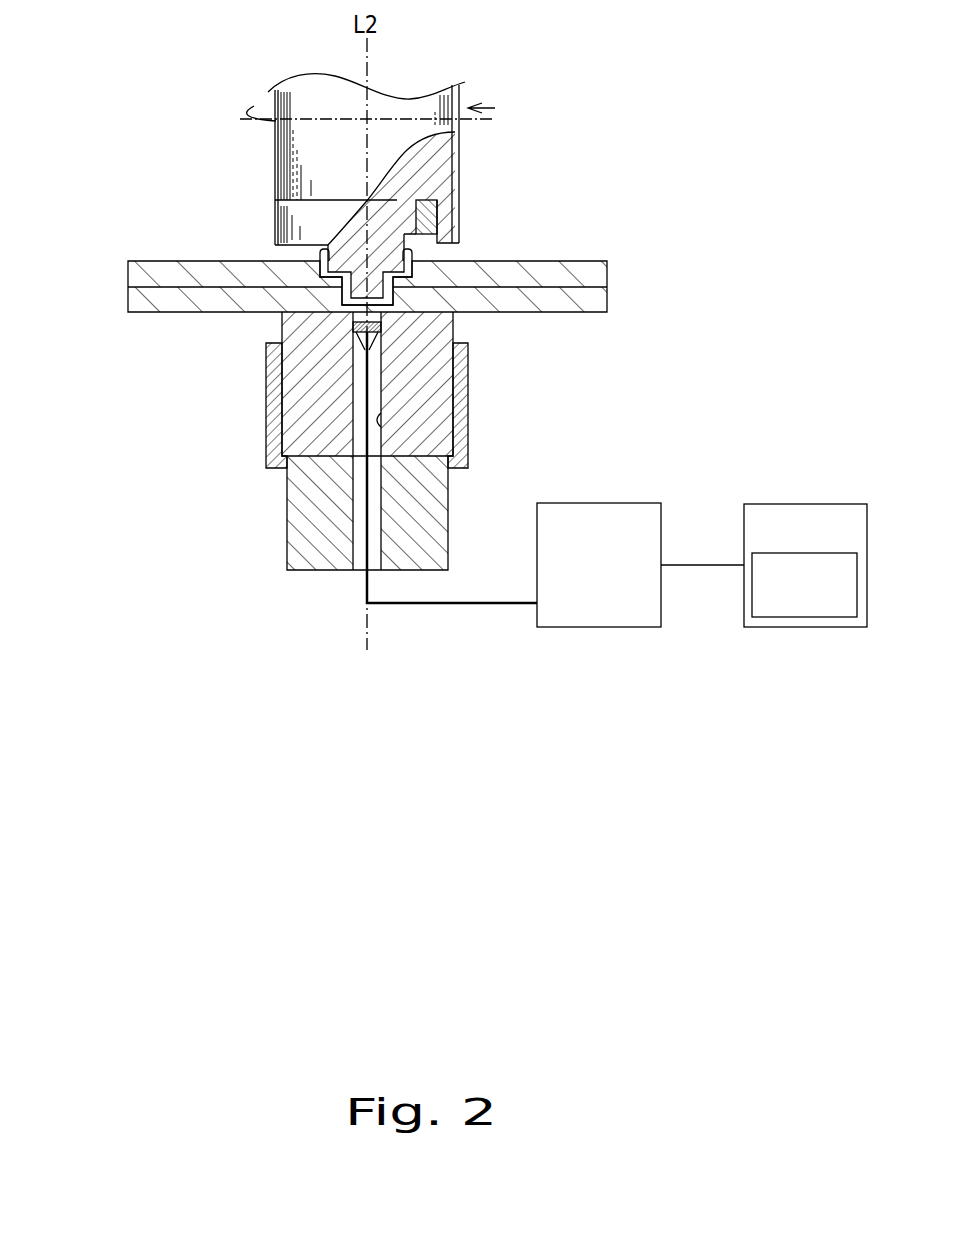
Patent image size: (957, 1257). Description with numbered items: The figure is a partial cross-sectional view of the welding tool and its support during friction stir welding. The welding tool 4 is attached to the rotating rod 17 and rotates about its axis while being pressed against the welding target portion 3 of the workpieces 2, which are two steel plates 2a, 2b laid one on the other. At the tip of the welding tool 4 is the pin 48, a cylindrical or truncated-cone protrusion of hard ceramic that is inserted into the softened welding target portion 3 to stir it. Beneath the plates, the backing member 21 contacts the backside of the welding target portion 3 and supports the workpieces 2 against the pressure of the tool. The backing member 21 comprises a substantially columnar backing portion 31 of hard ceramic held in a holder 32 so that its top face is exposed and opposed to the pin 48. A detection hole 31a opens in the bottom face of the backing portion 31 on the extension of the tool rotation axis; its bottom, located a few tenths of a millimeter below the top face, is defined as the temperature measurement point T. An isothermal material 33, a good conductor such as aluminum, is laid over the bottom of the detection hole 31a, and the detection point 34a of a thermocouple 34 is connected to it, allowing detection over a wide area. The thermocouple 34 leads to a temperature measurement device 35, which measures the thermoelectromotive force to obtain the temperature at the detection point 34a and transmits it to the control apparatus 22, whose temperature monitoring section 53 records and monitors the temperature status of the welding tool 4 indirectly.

The rotating rod 17 is at (275, 175).
The welding tool 4 is at (408, 250).
The workpieces 2 is at (313, 299).
The steel plate 2a is at (148, 262).
The steel plate 2b is at (336, 320).
The welding target portion 3 is at (320, 270).
The pin 48 is at (412, 277).
The backing member 21 is at (325, 441).
The backing portion 31 is at (281, 328).
The holder 32 is at (287, 522).
The isothermal material 33 is at (382, 343).
The detection hole 31a is at (383, 425).
The thermocouple 34 is at (447, 603).
The detection point 34a is at (367, 340).
The temperature measurement point T is at (383, 323).
The temperature measurement device 35 is at (598, 503).
The control apparatus 22 is at (818, 551).
The temperature monitoring section 53 is at (805, 617).